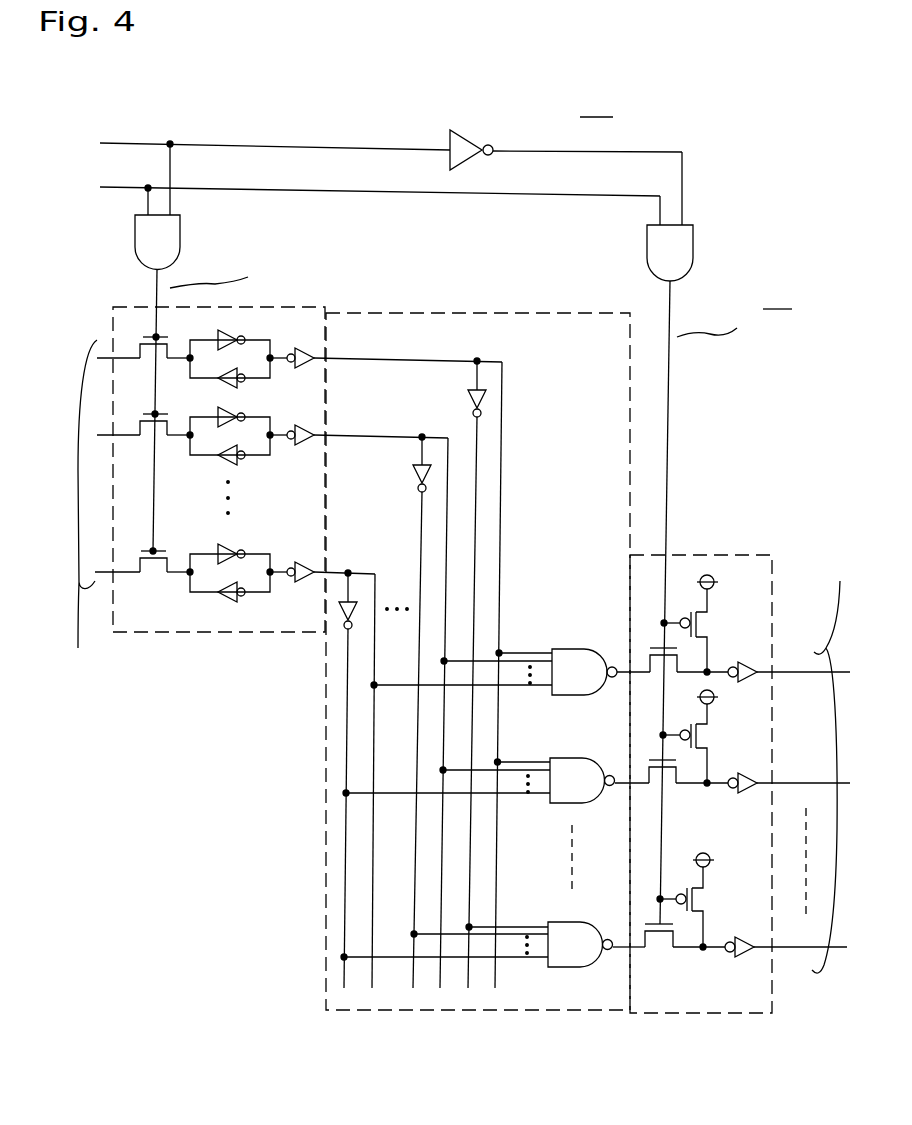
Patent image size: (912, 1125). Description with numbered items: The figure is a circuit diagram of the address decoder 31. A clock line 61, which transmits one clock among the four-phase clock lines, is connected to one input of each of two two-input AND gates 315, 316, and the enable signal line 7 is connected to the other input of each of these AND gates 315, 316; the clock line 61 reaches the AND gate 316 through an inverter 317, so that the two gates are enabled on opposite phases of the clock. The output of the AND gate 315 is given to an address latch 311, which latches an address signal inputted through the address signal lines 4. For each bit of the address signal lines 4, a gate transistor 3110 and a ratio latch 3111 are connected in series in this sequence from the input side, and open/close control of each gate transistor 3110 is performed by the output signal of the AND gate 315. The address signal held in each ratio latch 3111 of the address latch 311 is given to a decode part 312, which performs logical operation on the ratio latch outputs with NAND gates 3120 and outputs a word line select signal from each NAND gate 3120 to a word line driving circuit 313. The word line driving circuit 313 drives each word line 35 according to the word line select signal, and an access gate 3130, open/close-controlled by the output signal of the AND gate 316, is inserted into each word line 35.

The address decoder 31 is at (683, 122).
The clock line 61 is at (143, 143).
The enable signal line 7 is at (117, 190).
The inverter 317 is at (477, 135).
The AND gate 315 is at (180, 230).
The AND gate 316 is at (695, 240).
The address latch 311 is at (177, 632).
The gate transistor 3110 is at (138, 343).
The ratio latch 3111 is at (300, 385).
The address signal lines 4 is at (82, 511).
The decode part 312 is at (422, 1012).
The NAND gate 3120 is at (577, 648).
The word line driving circuit 313 is at (680, 1017).
The access gate 3130 is at (658, 645).
The word line 35 is at (836, 758).